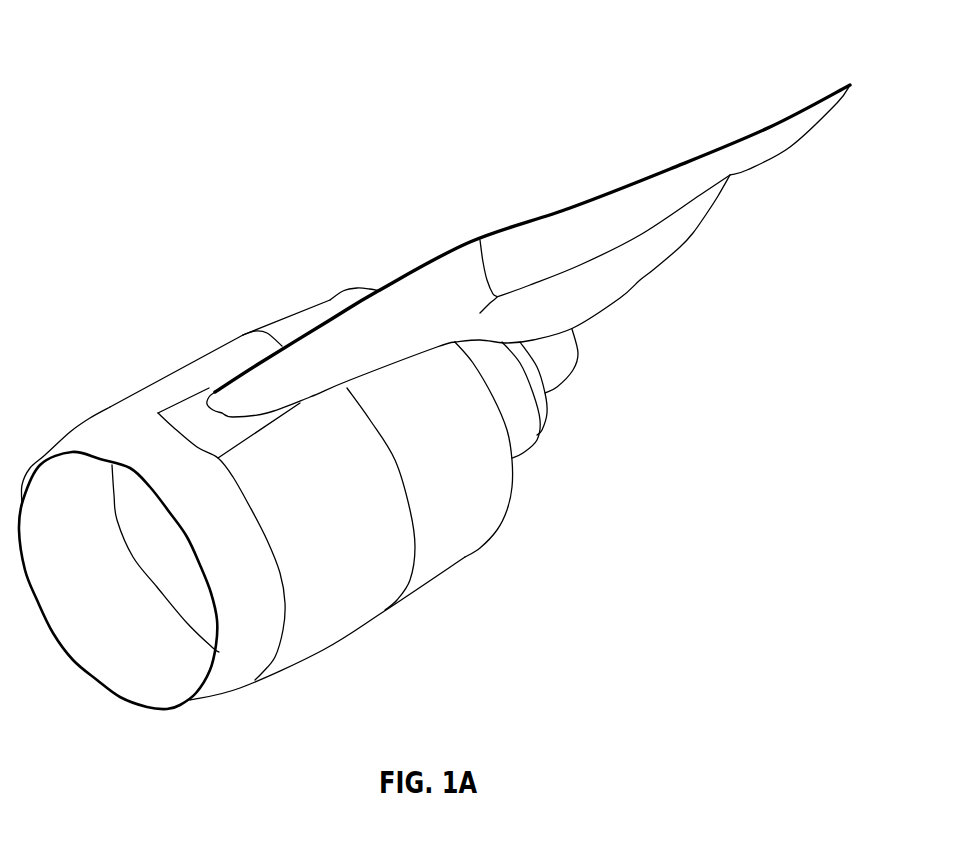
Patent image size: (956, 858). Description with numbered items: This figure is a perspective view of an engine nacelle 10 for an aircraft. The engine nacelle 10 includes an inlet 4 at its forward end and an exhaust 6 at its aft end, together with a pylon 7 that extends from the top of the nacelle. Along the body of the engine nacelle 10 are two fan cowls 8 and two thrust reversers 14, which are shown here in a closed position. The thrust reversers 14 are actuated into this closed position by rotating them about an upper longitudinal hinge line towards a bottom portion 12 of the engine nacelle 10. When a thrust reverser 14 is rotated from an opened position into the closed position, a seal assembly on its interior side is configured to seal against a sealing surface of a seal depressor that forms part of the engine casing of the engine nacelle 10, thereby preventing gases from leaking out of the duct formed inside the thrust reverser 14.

The engine nacelle 10 is at (749, 40).
The pylon 7 is at (445, 286).
The thrust reversers 14 is at (300, 323).
The fan cowls 8 is at (180, 381).
The exhaust 6 is at (530, 479).
The bottom portion 12 is at (387, 649).
The inlet 4 is at (165, 682).